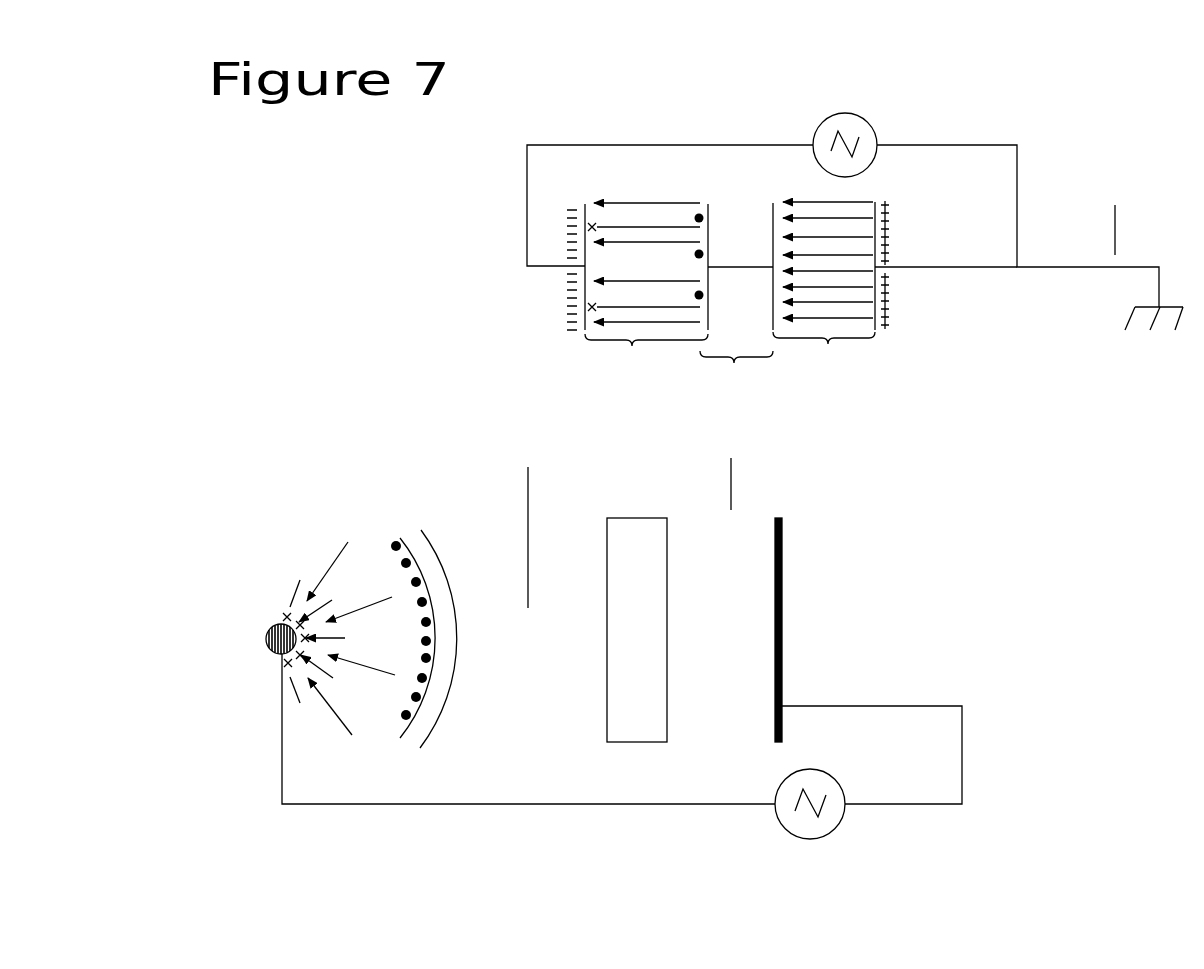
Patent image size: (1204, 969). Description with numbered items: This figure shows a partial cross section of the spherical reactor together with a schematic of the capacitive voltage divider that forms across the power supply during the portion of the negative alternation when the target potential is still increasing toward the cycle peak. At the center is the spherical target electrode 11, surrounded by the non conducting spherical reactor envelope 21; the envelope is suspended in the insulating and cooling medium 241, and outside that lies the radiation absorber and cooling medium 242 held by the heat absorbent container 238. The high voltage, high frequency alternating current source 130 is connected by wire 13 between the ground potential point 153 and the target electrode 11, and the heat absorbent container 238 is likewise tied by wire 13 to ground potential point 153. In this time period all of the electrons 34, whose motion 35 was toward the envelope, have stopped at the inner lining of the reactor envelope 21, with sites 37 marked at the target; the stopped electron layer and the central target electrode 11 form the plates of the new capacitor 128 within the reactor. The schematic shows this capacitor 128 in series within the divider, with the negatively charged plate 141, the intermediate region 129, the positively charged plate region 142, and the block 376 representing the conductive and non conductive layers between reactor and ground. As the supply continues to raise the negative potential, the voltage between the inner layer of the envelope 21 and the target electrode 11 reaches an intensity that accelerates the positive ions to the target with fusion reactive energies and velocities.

The spherical target electrode 11 is at (268, 620).
The wire 13 is at (517, 195).
The spherical reactor envelope 21 is at (432, 530).
The electrons (dots) 34 is at (701, 212).
The electron motion arrows 35 is at (638, 197).
The electron absorption sites (X marks) 37 is at (591, 220).
The new capacitor 128 is at (627, 350).
The intermediate gap region 129 is at (733, 364).
The alternating current source/power supply 130 is at (883, 125).
The negatively charged plate 141 is at (583, 303).
The positively charged plate region 142 is at (828, 350).
The ground potential point 153 is at (1122, 312).
The heat absorbent container 238 is at (779, 510).
The insulating and cooling medium 241 is at (528, 521).
The radiation absorber and cooling medium 242 is at (725, 470).
The insulator block 376 is at (635, 510).